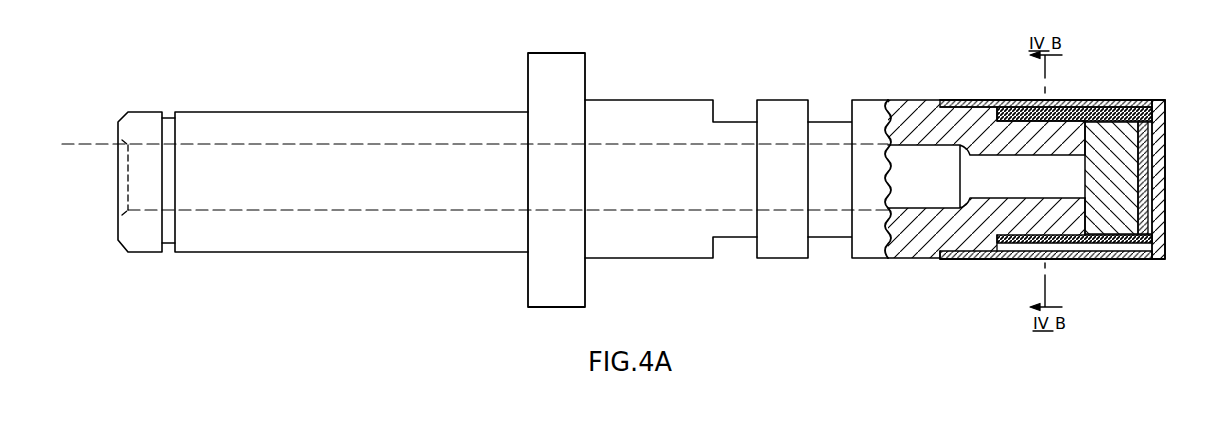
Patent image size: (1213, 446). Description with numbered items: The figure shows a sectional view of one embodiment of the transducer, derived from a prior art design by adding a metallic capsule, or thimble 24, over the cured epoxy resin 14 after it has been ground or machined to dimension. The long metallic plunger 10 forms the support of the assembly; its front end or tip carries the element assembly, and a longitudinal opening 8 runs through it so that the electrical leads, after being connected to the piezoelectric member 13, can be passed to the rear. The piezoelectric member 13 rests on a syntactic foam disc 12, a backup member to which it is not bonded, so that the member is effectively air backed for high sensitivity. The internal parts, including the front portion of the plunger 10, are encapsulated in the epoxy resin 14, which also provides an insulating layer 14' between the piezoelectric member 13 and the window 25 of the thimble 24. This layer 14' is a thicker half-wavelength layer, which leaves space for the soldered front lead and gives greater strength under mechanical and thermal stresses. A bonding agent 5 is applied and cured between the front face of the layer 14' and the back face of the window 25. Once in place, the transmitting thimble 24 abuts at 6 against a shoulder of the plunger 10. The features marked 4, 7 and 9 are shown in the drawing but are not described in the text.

The outer cap shell 4 is at (1160, 228).
The bonding agent 5 is at (1151, 188).
The abutment 6 is at (948, 100).
The body shoulder 7 is at (977, 110).
The longitudinal opening 8 is at (921, 191).
The bottom strip 9 is at (1027, 259).
The plunger 10 is at (372, 111).
The syntactic foam disc 12 is at (1118, 157).
The piezoelectric member 13 is at (1143, 150).
The epoxy resin 14 is at (1078, 98).
The insulating layer 14' is at (1176, 174).
The thimble 24 is at (1075, 259).
The window 25 is at (1155, 212).